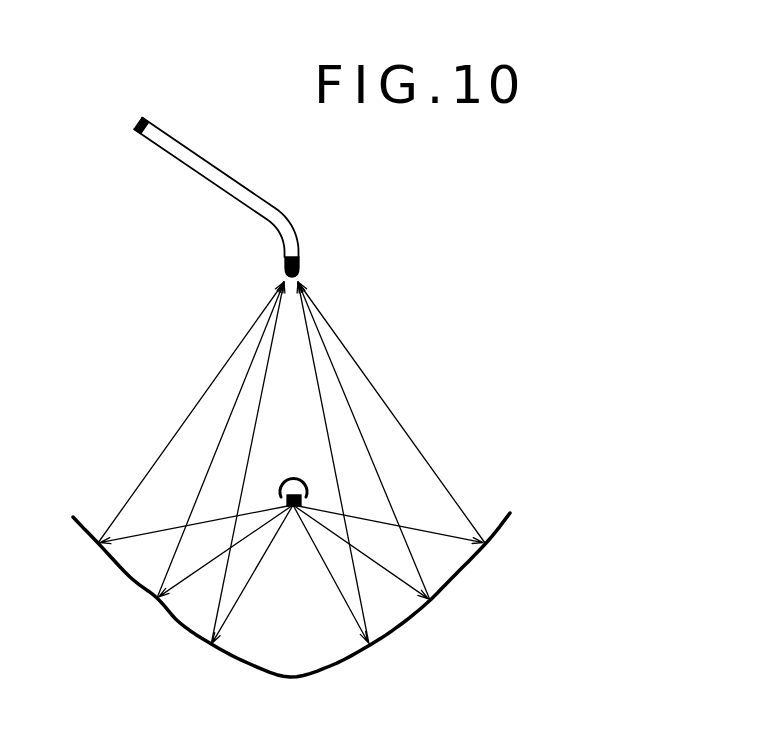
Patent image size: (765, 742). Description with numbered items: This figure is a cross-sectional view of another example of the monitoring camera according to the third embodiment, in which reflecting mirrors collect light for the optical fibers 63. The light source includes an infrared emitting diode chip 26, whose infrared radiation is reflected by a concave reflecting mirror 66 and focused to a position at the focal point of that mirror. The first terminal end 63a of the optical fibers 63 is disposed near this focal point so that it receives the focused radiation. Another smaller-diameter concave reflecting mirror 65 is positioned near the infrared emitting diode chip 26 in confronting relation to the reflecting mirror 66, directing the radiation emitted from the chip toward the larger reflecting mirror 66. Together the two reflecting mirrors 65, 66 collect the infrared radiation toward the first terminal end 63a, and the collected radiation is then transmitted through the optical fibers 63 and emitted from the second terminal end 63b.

The optical fibers 63 is at (265, 201).
The first terminal end 63a is at (302, 266).
The second terminal end 63b is at (138, 114).
The smaller-diameter concave reflecting mirror 65 is at (303, 484).
The infrared emitting diode chip 26 is at (303, 501).
The concave reflecting mirror 66 is at (468, 572).